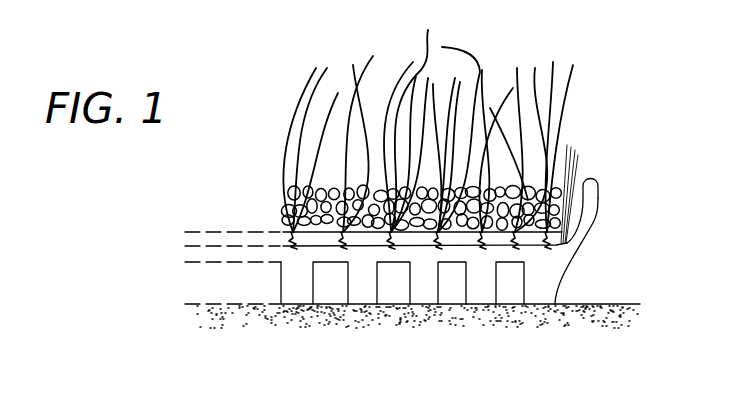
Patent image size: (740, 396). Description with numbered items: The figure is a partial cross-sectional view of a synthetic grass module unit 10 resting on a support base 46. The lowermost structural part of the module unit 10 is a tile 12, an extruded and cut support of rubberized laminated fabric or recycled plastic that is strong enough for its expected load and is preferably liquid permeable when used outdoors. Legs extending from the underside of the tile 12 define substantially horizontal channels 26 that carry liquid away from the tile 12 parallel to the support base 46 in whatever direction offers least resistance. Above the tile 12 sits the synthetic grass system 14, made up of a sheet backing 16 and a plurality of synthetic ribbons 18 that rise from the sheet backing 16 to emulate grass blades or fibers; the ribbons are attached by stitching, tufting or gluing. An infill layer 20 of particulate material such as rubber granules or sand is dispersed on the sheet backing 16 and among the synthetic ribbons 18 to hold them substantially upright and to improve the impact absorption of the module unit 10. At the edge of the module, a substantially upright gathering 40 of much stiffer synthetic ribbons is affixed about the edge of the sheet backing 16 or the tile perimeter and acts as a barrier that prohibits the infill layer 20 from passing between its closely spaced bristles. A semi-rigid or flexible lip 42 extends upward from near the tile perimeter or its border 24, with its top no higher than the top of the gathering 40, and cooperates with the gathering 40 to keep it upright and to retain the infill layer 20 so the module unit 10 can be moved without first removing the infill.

The synthetic grass module unit 10 is at (603, 77).
The tile 12 is at (298, 276).
The synthetic grass system 14 is at (230, 189).
The sheet backing 16 is at (284, 222).
The synthetic ribbons 18 is at (365, 60).
The infill layer 20 is at (335, 188).
The border 24 is at (556, 255).
The channels 26 is at (387, 287).
The gathering of stiffer synthetic ribbons 40 is at (580, 158).
The lip 42 is at (590, 205).
The support base 46 is at (203, 313).